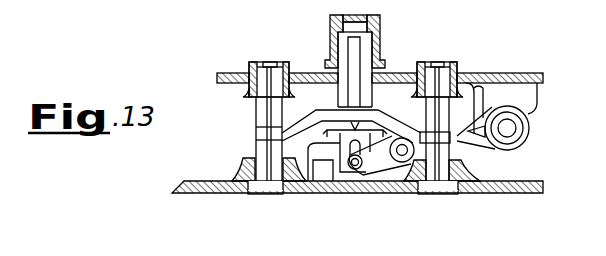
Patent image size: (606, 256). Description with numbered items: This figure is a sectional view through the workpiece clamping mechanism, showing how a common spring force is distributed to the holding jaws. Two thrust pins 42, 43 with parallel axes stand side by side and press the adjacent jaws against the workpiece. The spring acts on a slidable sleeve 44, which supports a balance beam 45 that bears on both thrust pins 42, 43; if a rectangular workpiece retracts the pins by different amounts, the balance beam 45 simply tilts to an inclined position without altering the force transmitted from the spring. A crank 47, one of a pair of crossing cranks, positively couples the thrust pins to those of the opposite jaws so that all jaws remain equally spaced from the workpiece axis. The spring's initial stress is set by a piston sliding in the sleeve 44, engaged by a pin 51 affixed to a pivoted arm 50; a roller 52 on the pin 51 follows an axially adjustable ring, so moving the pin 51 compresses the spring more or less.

The thrust pin 42 is at (267, 106).
The thrust pin 43 is at (452, 196).
The slidable sleeve 44 is at (353, 92).
The balance beam 45 is at (302, 193).
The crank 47 is at (512, 130).
The pivoted arm 50 is at (410, 193).
The pin 51 is at (353, 169).
The roller 52 is at (380, 165).